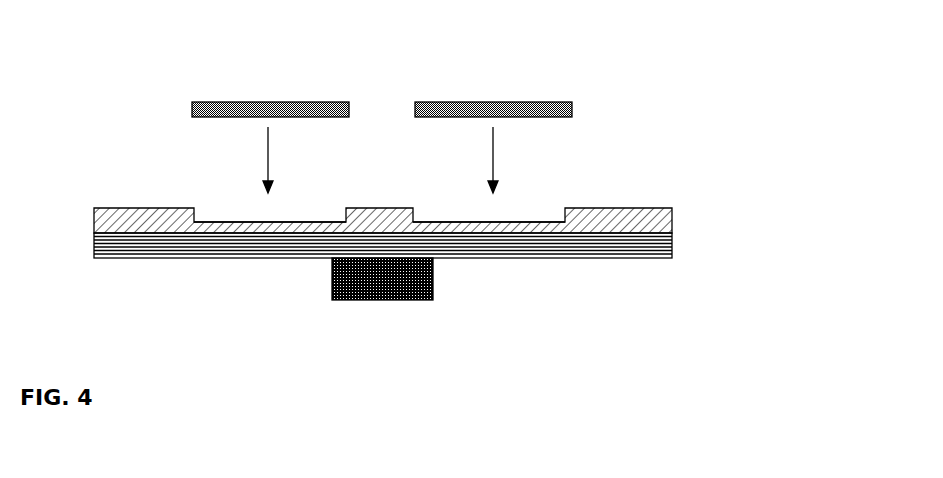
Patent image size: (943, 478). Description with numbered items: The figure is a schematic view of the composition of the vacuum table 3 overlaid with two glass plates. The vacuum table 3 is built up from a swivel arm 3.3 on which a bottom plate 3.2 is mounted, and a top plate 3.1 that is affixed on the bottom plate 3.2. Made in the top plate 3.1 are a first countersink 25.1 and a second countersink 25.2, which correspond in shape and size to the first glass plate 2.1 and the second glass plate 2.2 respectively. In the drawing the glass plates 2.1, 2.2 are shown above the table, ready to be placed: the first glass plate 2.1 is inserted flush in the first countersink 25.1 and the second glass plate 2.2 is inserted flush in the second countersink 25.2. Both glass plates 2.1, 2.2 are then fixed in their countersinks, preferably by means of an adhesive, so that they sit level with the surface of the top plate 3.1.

The first glass plate 2.1 is at (528, 109).
The second glass plate 2.2 is at (239, 109).
The first countersink 25.1 is at (517, 220).
The second countersink 25.2 is at (242, 217).
The vacuum table 3 is at (441, 210).
The top plate 3.1 is at (653, 222).
The bottom plate 3.2 is at (653, 242).
The swivel arm 3.3 is at (420, 277).